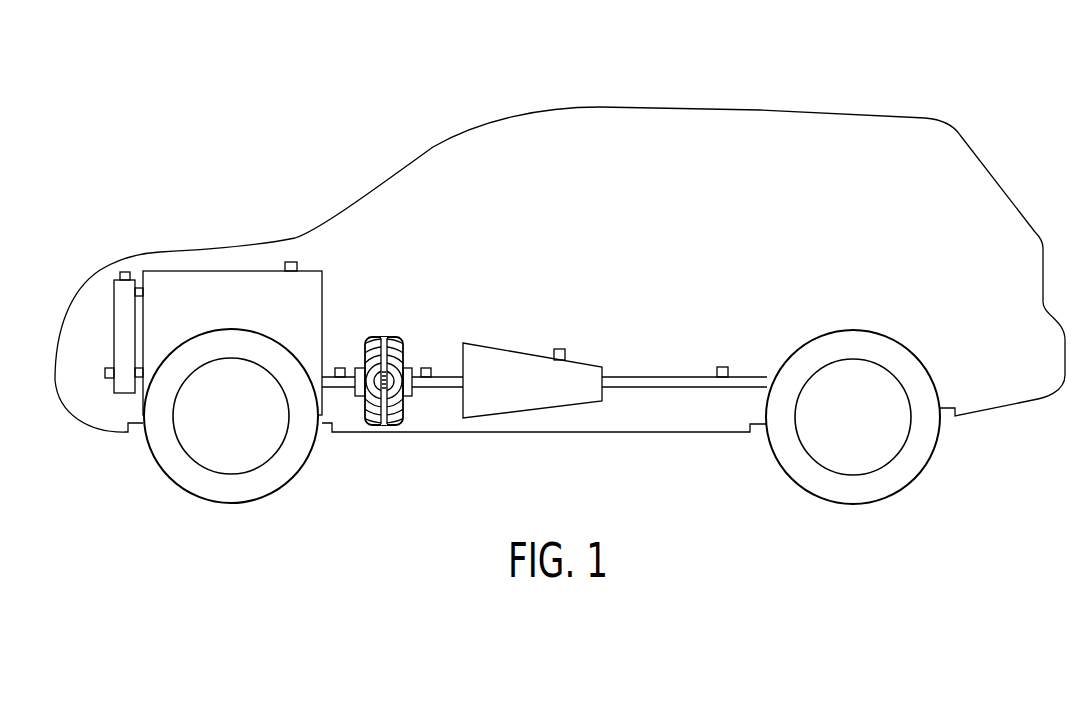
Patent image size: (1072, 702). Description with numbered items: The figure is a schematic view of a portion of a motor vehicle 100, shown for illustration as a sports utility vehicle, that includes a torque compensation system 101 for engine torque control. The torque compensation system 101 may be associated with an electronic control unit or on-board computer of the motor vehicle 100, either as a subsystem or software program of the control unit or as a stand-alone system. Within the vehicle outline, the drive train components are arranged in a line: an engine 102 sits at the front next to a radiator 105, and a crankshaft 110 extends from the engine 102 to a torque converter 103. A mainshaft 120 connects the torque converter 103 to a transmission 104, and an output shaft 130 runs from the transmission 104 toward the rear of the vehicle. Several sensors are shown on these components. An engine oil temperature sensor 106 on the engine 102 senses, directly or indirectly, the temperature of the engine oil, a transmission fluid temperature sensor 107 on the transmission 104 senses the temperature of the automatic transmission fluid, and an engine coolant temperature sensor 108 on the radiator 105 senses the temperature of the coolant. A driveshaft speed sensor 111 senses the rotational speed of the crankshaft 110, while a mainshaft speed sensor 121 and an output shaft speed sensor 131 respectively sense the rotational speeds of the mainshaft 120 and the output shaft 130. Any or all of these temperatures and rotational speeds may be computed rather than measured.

The motor vehicle 100 is at (628, 107).
The torque compensation system 101 is at (310, 164).
The engine 102 is at (215, 271).
The torque converter 103 is at (393, 337).
The transmission 104 is at (577, 362).
The radiator 105 is at (114, 308).
The engine oil temperature sensor 106 is at (288, 262).
The transmission fluid temperature sensor 107 is at (558, 349).
The engine coolant temperature sensor 108 is at (105, 372).
The crankshaft 110 is at (338, 388).
The driveshaft speed sensor 111 is at (341, 368).
The mainshaft 120 is at (437, 388).
The mainshaft speed sensor 121 is at (426, 368).
The output shaft 130 is at (689, 388).
The output shaft speed sensor 131 is at (722, 367).